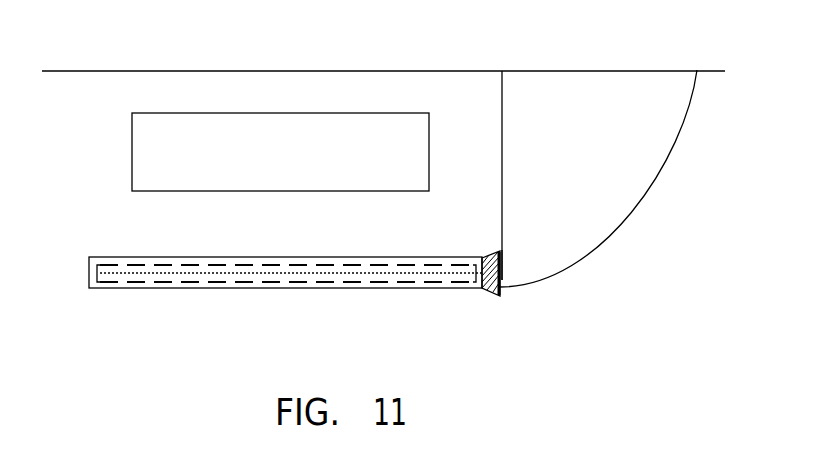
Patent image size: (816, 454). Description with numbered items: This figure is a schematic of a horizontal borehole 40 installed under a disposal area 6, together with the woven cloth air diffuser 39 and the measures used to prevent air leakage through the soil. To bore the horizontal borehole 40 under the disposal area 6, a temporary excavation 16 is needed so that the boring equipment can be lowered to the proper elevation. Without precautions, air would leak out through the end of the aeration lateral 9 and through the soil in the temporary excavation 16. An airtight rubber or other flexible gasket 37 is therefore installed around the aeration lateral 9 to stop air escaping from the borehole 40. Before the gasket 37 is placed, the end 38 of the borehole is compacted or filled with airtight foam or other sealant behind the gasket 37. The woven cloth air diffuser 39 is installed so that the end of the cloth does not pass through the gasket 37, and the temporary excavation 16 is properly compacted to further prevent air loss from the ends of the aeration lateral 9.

The disposal area 6 is at (186, 113).
The temporary excavation 16 is at (502, 190).
The gasket 37 is at (502, 278).
The end of the borehole 38 is at (487, 256).
The woven cloth air diffuser 39 is at (218, 280).
The horizontal borehole 40 is at (207, 257).
The aeration lateral 9 is at (150, 280).